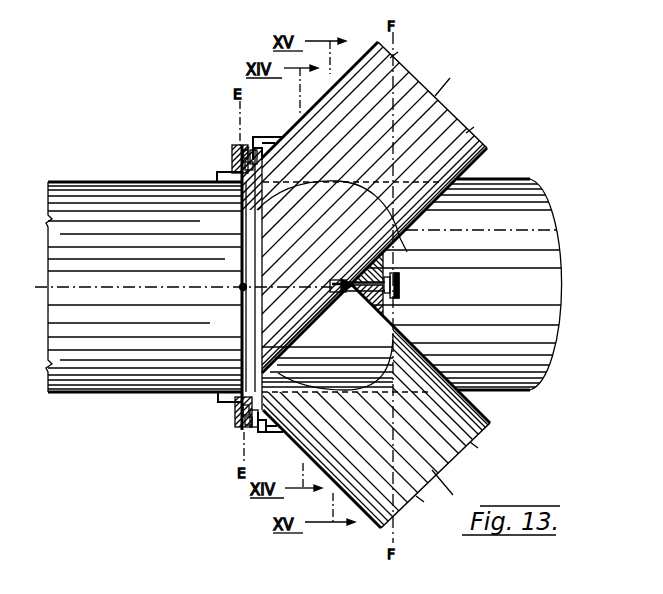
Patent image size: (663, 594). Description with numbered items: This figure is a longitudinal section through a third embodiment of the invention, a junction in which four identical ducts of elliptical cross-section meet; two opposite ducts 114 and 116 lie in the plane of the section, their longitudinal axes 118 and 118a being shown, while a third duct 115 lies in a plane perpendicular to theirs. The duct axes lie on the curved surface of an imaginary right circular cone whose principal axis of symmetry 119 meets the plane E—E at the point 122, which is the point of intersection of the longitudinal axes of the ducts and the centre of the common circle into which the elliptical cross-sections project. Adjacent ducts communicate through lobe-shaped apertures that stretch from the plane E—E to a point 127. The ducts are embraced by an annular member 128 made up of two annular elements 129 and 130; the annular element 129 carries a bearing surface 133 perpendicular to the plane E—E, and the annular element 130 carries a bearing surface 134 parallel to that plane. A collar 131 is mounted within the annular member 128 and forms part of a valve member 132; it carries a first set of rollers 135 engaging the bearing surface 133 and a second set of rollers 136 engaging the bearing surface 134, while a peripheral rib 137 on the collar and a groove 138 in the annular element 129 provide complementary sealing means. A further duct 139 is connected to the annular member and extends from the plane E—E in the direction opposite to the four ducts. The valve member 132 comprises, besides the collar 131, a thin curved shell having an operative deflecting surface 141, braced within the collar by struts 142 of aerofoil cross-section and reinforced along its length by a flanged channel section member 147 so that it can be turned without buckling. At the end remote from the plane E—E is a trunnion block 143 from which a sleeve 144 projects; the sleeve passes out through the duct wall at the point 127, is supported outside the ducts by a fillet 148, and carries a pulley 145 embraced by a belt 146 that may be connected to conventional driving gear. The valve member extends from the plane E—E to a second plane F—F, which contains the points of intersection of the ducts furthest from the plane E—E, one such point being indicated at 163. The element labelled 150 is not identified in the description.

The duct 114 is at (433, 147).
The duct 115 is at (498, 284).
The duct 116 is at (411, 471).
The longitudinal axis of duct 114 118 is at (437, 90).
The longitudinal axis of duct 116 118a is at (445, 488).
The principal axis of symmetry of the cone 119 is at (167, 287).
The point of intersection of the longitudinal axes 122 is at (240, 284).
The point 127 is at (350, 280).
The annular member 128 is at (232, 147).
The annular element 129 is at (232, 158).
The annular element 130 is at (262, 137).
The collar 131 is at (243, 390).
The valve member 132 is at (373, 212).
The bearing surface 133 is at (238, 428).
The bearing surface 134 is at (270, 432).
The rollers of the first set 135 is at (234, 418).
The rollers of the second set 136 is at (250, 428).
The peripheral rib 137 is at (228, 173).
The groove 138 is at (233, 402).
The further duct 139 is at (146, 321).
The operative deflecting surface 141 is at (306, 249).
The struts 142 is at (240, 292).
The trunnion block 143 is at (335, 290).
The sleeve 144 is at (383, 268).
The pulley 145 is at (400, 287).
The belt 146 is at (392, 292).
The flanged channel section member 147 is at (316, 336).
The fillet 148 is at (381, 302).
The pipe wall 150 is at (330, 178).
The point of intersection of the ducts furthest from plane E—E 163 is at (391, 207).